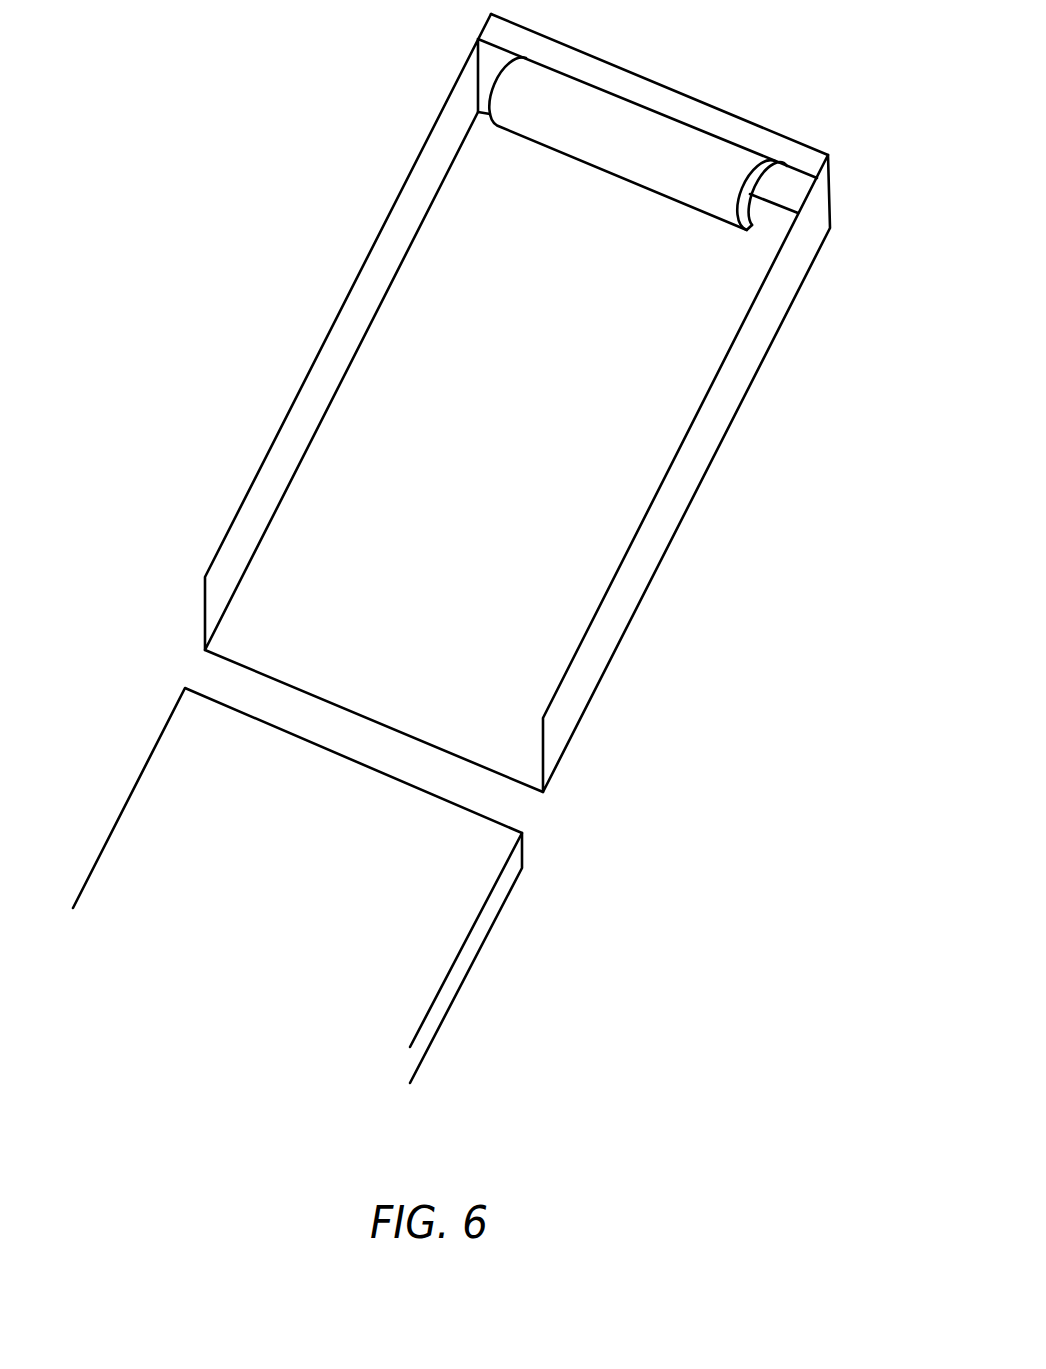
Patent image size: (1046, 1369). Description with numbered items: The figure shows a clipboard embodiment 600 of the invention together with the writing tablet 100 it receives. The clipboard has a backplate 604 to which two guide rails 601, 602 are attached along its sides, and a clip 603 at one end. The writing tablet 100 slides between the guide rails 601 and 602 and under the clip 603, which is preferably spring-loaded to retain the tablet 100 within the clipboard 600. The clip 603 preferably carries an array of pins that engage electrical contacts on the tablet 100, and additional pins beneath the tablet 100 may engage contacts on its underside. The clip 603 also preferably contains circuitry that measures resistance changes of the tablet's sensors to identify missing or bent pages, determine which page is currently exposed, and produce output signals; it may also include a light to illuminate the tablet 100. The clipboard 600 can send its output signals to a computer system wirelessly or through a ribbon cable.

The clipboard embodiment 600 is at (523, 403).
The guide rail 601 is at (342, 350).
The guide rail 602 is at (753, 357).
The clip 603 is at (643, 128).
The backplate 604 is at (585, 512).
The writing tablet 100 is at (437, 585).